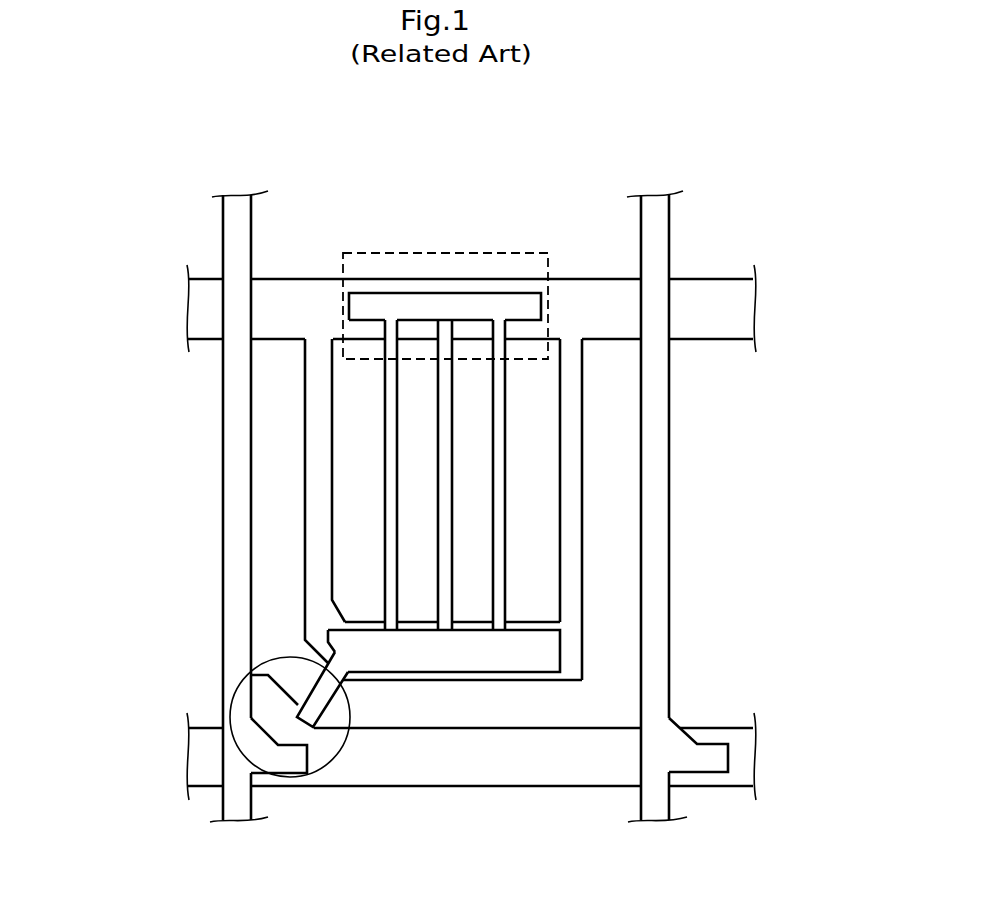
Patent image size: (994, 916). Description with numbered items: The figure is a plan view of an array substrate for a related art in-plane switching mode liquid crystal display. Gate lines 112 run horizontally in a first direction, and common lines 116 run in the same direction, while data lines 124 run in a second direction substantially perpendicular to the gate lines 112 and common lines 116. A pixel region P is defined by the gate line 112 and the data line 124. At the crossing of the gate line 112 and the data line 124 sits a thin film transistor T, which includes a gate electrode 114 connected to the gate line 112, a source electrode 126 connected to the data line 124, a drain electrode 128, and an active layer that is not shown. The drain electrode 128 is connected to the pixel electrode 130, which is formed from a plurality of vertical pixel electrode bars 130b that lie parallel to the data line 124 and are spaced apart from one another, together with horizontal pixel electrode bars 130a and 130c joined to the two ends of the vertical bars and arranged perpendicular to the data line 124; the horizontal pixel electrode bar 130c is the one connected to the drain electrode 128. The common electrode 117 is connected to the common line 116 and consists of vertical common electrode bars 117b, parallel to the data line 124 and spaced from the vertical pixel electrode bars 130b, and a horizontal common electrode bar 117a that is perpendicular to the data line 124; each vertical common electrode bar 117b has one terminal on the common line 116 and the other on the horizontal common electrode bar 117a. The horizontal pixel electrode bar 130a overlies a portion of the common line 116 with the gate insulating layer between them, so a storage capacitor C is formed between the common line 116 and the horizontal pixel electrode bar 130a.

The gate line 112 is at (527, 772).
The gate electrode 114 is at (262, 697).
The common line 116 is at (725, 302).
The common electrode 117 is at (618, 510).
The horizontal common electrode bar 117a is at (573, 655).
The vertical common electrode bar 117b is at (572, 568).
The data line 124 is at (655, 492).
The source electrode 126 is at (292, 762).
The drain electrode 128 is at (322, 695).
The pixel electrode 130 is at (296, 480).
The horizontal pixel electrode bar 130a is at (362, 308).
The vertical pixel electrode bar 130b is at (383, 440).
The horizontal pixel electrode bar 130c is at (352, 628).
The thin film transistor T is at (282, 657).
The storage capacitor C is at (478, 243).
The pixel region P is at (713, 558).